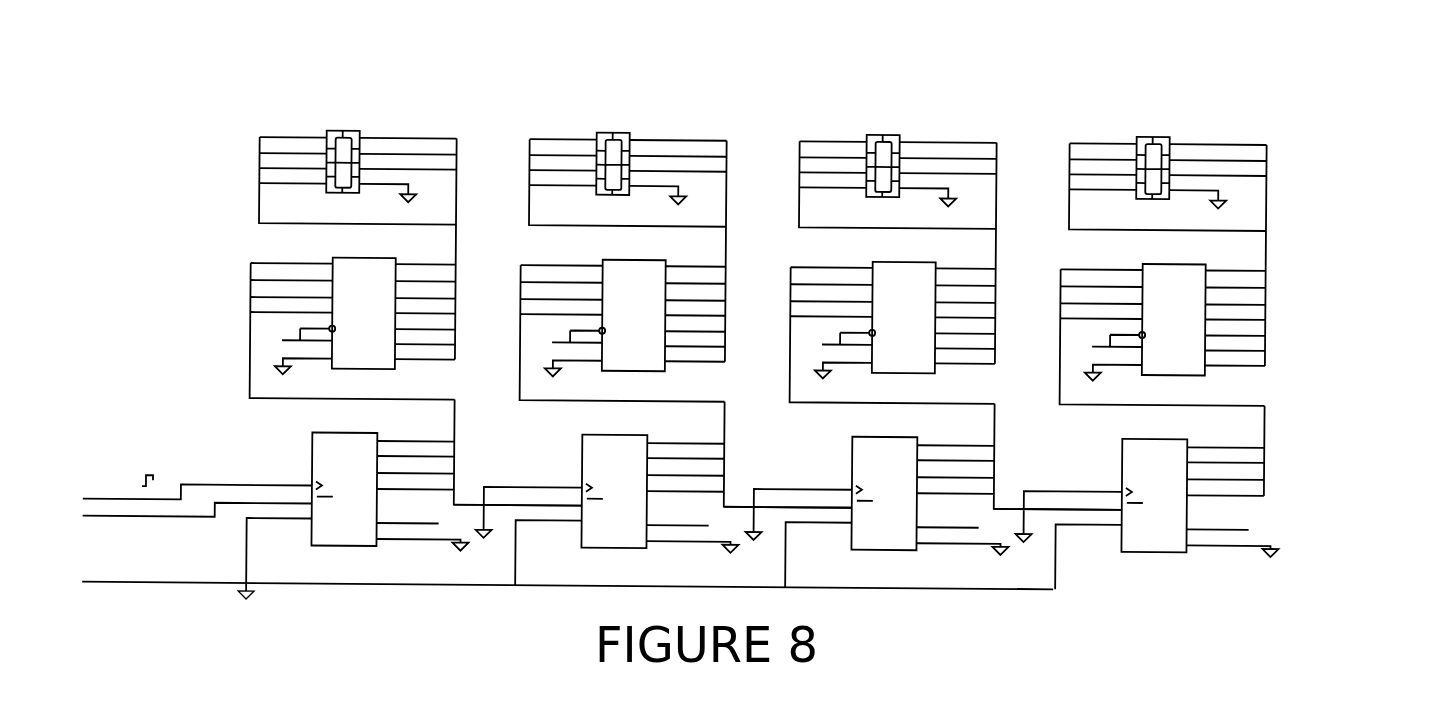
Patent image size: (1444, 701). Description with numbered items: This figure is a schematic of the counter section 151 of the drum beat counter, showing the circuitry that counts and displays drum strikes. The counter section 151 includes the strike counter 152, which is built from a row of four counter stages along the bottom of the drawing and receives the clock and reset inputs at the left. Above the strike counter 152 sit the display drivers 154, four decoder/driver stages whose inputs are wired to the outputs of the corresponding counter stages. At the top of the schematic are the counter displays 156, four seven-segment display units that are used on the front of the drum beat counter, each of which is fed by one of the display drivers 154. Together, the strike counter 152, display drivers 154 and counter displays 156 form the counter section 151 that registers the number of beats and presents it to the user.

The counter section 151 is at (754, 309).
The strike counter 152 is at (1275, 437).
The display drivers 154 is at (1280, 305).
The counter displays 156 is at (1275, 182).